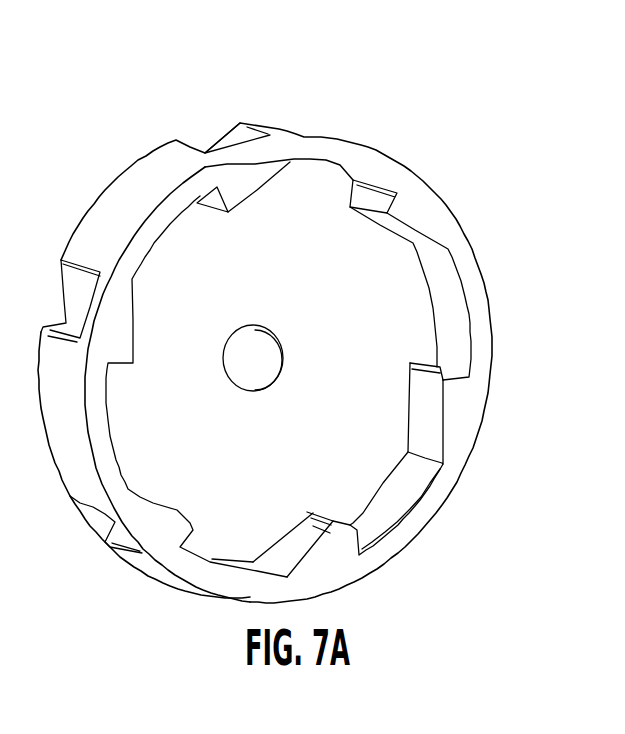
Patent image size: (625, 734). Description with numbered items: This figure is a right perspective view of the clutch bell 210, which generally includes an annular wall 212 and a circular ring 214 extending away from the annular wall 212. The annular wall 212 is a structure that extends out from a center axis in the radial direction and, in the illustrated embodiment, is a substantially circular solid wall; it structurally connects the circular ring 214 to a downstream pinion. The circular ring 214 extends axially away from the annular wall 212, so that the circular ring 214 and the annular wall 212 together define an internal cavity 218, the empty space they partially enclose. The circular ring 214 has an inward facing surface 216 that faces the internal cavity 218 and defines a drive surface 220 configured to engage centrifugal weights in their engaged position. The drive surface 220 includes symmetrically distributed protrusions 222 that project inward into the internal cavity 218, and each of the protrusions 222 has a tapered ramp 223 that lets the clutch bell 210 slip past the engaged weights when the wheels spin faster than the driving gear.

The clutch bell 210 is at (305, 90).
The annular wall 212 is at (281, 453).
The circular ring 214 is at (157, 178).
The inward facing surface 216 is at (384, 498).
The internal cavity 218 is at (402, 310).
The drive surface 220 is at (457, 335).
The protrusions 222 is at (441, 369).
The tapered ramp 223 is at (430, 424).